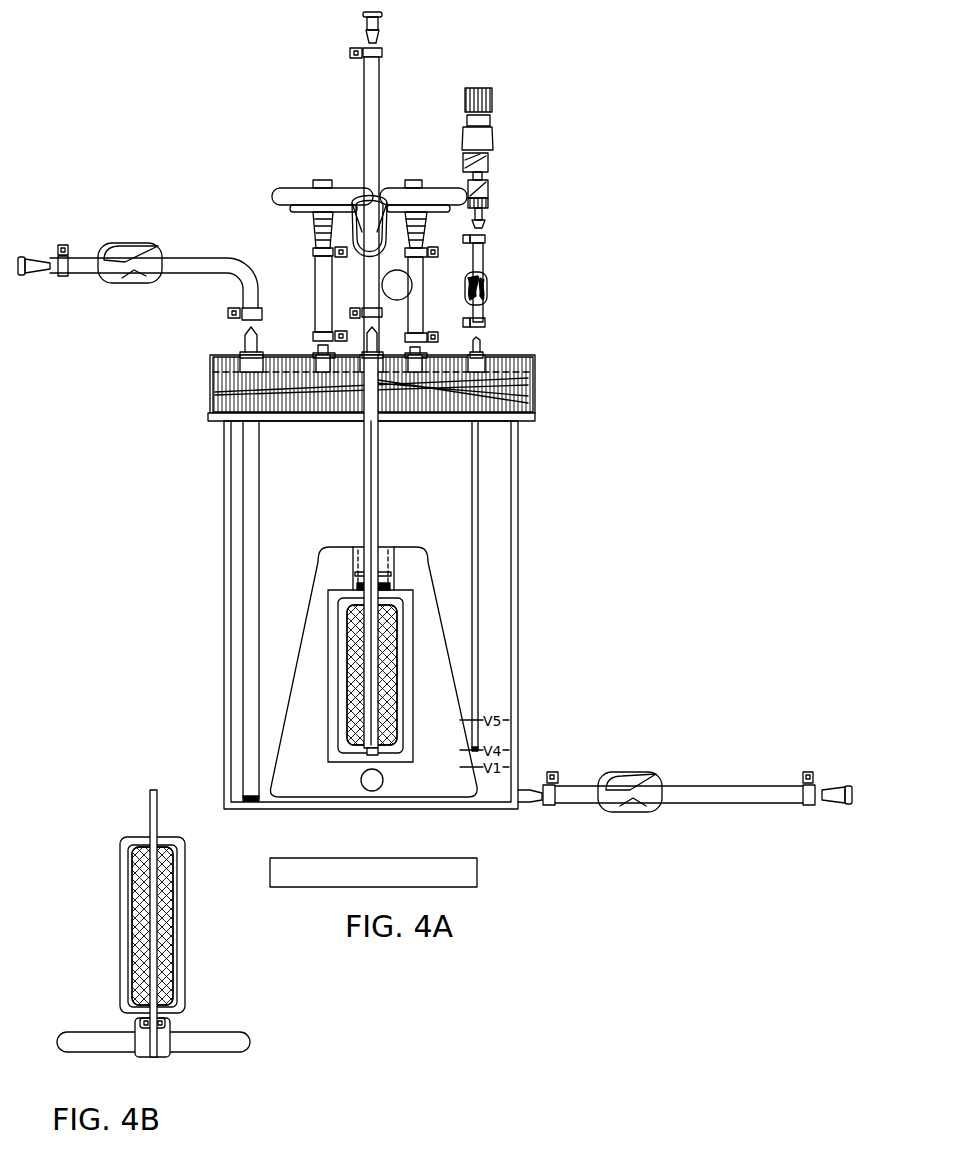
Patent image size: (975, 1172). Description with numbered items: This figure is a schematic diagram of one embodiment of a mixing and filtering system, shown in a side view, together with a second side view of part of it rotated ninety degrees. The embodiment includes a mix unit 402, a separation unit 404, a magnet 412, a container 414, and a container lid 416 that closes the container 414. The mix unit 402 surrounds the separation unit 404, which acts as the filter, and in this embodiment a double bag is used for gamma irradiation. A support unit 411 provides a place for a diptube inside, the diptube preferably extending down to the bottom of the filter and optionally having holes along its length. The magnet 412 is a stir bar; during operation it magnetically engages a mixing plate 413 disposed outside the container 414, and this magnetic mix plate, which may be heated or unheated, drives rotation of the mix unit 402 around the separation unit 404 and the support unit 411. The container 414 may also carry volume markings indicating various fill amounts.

In FIG. 4A, the mix unit 402 is at (297, 729).
In FIG. 4B, the mix unit 402 is at (150, 932).
In FIG. 4A, the separation unit 404 is at (393, 617).
In FIG. 4B, the separation unit 404 is at (130, 870).
In FIG. 4A, the support unit 411 is at (379, 474).
In FIG. 4B, the support unit 411 is at (150, 806).
In FIG. 4A, the magnet 412 is at (372, 791).
In FIG. 4B, the magnet 412 is at (233, 1047).
In FIG. 4A, the mixing plate 413 is at (479, 872).
In FIG. 4A, the container 414 is at (519, 456).
In FIG. 4A, the container lid 416 is at (536, 373).